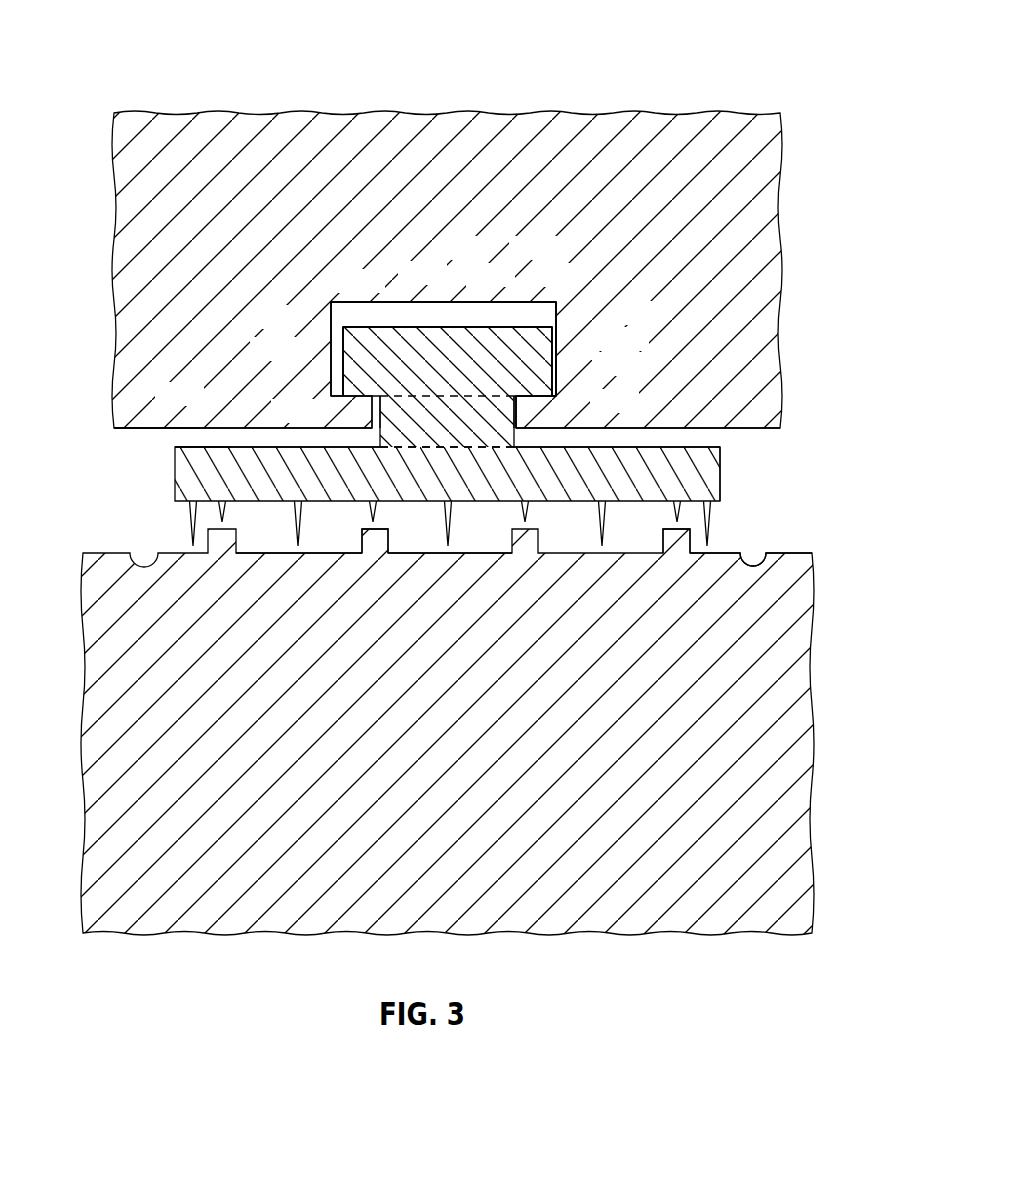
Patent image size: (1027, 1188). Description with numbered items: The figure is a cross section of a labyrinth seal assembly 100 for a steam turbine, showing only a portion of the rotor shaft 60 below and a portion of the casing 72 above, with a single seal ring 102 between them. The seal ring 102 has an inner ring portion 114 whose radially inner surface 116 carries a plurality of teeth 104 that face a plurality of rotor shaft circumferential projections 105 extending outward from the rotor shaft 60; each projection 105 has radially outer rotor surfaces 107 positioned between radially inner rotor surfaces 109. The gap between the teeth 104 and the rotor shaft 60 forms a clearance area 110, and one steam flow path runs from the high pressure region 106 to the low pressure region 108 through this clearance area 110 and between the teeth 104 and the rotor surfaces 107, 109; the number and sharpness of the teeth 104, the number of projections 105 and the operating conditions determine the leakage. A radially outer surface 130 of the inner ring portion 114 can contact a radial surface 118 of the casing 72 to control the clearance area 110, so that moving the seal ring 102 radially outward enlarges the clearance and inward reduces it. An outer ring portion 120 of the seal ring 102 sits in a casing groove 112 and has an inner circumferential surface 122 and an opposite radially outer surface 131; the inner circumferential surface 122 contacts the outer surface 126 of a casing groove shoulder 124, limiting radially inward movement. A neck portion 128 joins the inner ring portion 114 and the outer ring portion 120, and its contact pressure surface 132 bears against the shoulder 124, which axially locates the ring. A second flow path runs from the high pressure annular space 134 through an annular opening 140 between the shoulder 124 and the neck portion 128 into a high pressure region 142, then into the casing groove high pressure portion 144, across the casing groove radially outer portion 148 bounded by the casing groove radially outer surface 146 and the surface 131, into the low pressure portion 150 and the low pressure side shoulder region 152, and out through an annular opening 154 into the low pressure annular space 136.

The labyrinth seal assembly 100 is at (156, 52).
The casing 72 is at (728, 128).
The rotor shaft 60 is at (86, 582).
The seal ring 102 is at (185, 468).
The teeth 104 is at (710, 504).
The rotor shaft circumferential projections 105 is at (675, 530).
The high pressure region 106 is at (52, 507).
The radially outer rotor surfaces 107 is at (368, 548).
The low pressure region 108 is at (885, 503).
The radially inner rotor surfaces 109 is at (310, 557).
The clearance area 110 is at (692, 554).
The casing groove 112 is at (470, 326).
The inner ring portion 114 is at (722, 478).
The radially inner surface 116 is at (277, 503).
The radial surface 118 is at (150, 428).
The outer ring portion 120 is at (523, 330).
The inner circumferential surface 122 is at (548, 355).
The casing groove shoulder 124 is at (530, 417).
The outer surface 126 is at (560, 350).
The neck portion 128 is at (363, 328).
The radially outer surface 130 is at (197, 443).
The radially outer surface 131 is at (402, 322).
The contact pressure surface 132 is at (505, 388).
The high pressure annular space 134 is at (185, 437).
The low pressure annular space 136 is at (712, 432).
The annular opening 140 is at (372, 420).
The high pressure region 142 is at (345, 368).
The casing groove high pressure portion 144 is at (335, 325).
The casing groove radially outer surface 146 is at (443, 318).
The casing groove radially outer portion 148 is at (503, 316).
The low pressure portion 150 is at (576, 330).
The low pressure side shoulder region 152 is at (558, 388).
The annular opening 154 is at (556, 450).